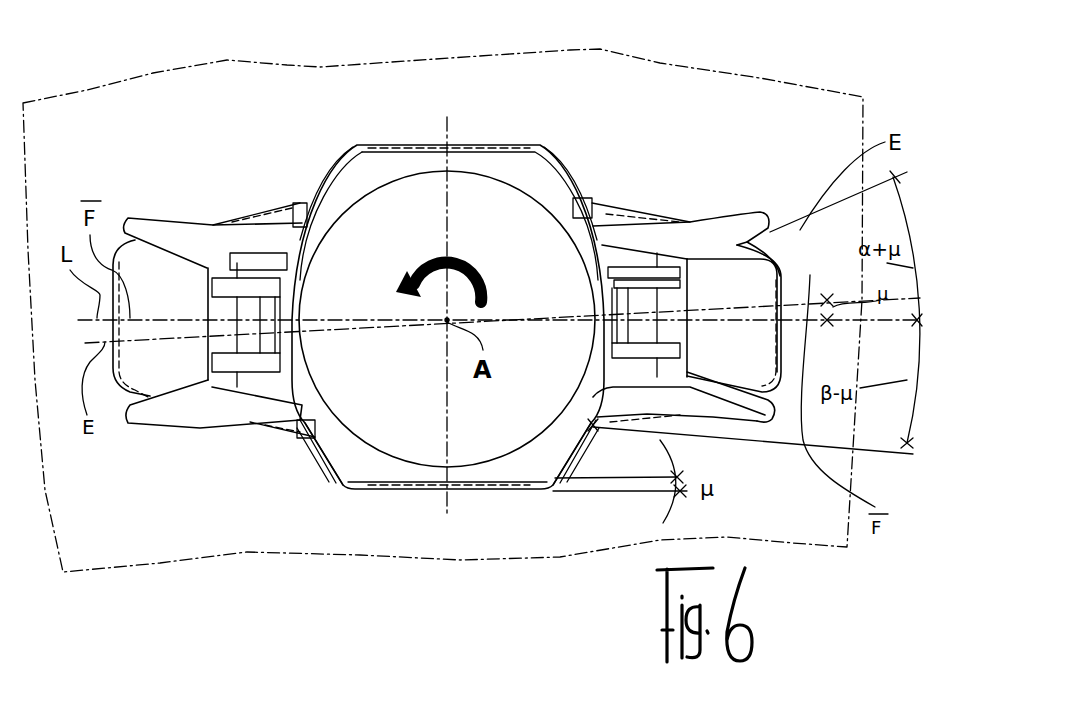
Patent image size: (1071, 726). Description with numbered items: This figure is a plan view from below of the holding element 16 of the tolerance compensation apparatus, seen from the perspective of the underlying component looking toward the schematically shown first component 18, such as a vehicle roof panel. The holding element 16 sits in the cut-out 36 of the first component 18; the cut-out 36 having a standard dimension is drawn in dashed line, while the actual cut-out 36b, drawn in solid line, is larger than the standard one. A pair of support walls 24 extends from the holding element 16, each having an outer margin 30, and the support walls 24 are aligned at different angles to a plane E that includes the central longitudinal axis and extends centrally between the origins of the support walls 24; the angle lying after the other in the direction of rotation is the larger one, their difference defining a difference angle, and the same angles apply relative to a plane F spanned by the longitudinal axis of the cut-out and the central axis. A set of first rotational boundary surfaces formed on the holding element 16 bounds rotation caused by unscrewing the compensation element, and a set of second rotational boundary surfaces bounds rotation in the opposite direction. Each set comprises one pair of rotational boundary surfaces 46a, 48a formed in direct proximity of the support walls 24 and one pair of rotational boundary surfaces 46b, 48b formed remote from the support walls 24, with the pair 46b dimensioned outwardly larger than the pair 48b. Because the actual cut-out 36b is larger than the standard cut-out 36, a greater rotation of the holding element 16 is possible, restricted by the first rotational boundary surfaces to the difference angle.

The holding element 16 is at (485, 165).
The first component 18 is at (693, 108).
The support walls 24 is at (705, 225).
The outer margin 30 is at (130, 430).
The cut-out 36 is at (797, 262).
The actual cut-out 36b is at (778, 240).
The pair of rotational boundary surfaces 46a is at (583, 210).
The pair of rotational boundary surfaces 46b is at (337, 175).
The pair of rotational boundary surfaces 48a is at (310, 217).
The pair of rotational boundary surfaces 48b is at (548, 168).